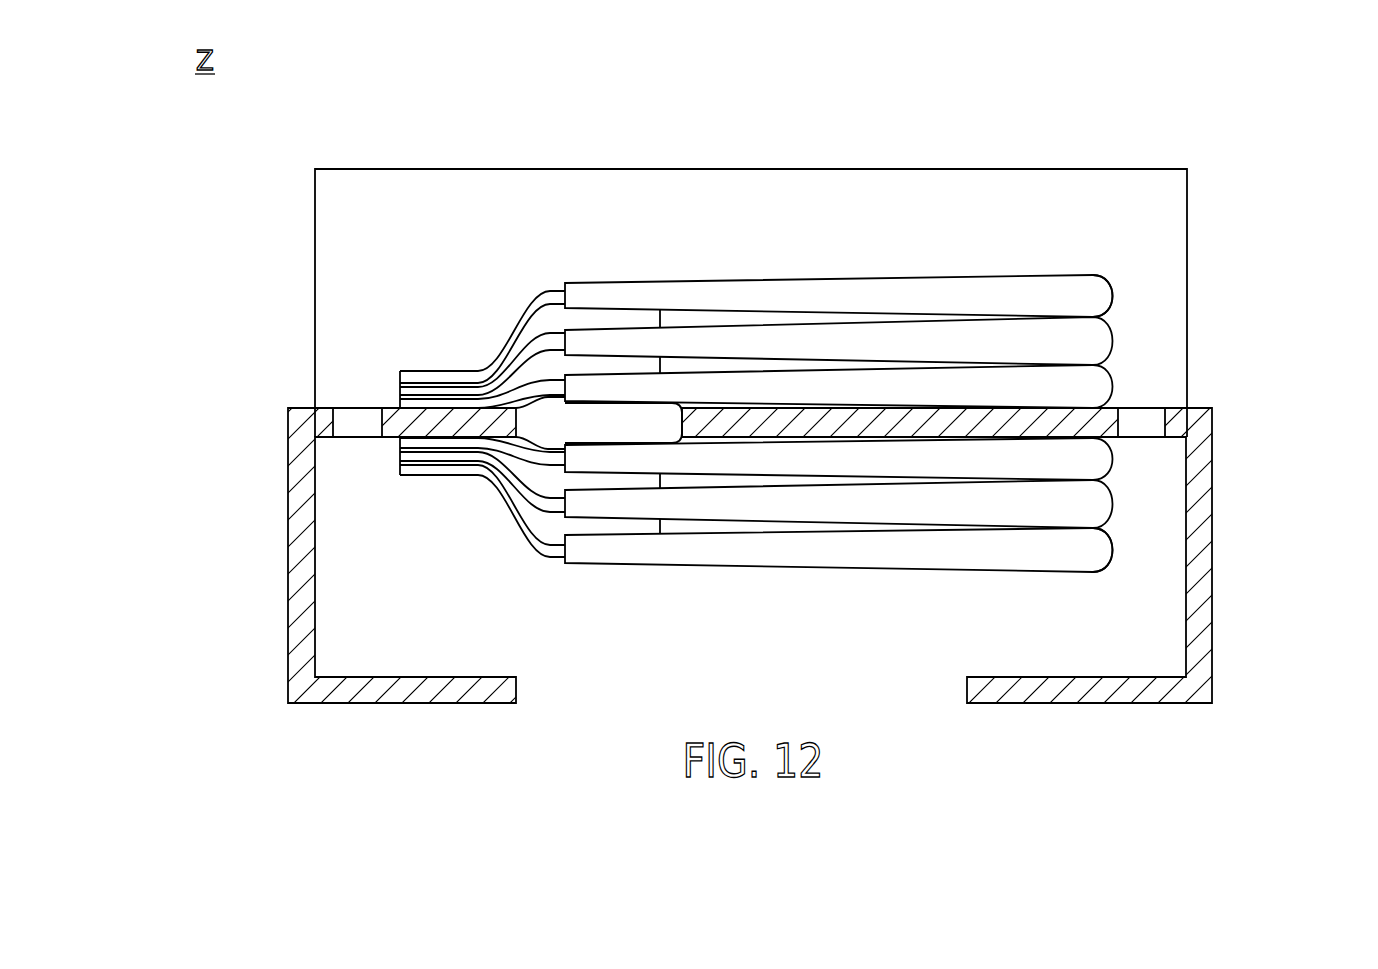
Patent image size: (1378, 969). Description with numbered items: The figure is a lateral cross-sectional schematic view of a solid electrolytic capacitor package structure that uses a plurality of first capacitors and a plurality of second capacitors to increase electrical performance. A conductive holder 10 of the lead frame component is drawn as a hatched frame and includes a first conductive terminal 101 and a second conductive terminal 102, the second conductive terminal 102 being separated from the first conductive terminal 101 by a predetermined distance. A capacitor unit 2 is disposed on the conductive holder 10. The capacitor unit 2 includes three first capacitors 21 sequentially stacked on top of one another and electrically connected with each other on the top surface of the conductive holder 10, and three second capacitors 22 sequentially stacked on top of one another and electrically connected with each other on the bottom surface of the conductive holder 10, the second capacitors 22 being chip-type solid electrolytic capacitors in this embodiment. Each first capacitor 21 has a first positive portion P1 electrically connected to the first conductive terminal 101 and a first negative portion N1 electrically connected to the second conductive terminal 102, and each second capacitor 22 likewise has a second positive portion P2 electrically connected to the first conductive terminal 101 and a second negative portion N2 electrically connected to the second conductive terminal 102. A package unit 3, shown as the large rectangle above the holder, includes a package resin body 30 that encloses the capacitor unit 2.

The capacitor unit 2 is at (937, 423).
The first capacitor 21 is at (1092, 293).
The second capacitor 22 is at (1095, 458).
The package unit 3 is at (769, 411).
The package resin body 30 is at (338, 290).
The conductive holder 10 is at (689, 555).
The first conductive terminal 101 is at (303, 577).
The second conductive terminal 102 is at (1203, 582).
The first positive portion P1 is at (512, 314).
The second positive portion P2 is at (512, 532).
The first negative portion N1 is at (950, 272).
The second negative portion N2 is at (951, 575).